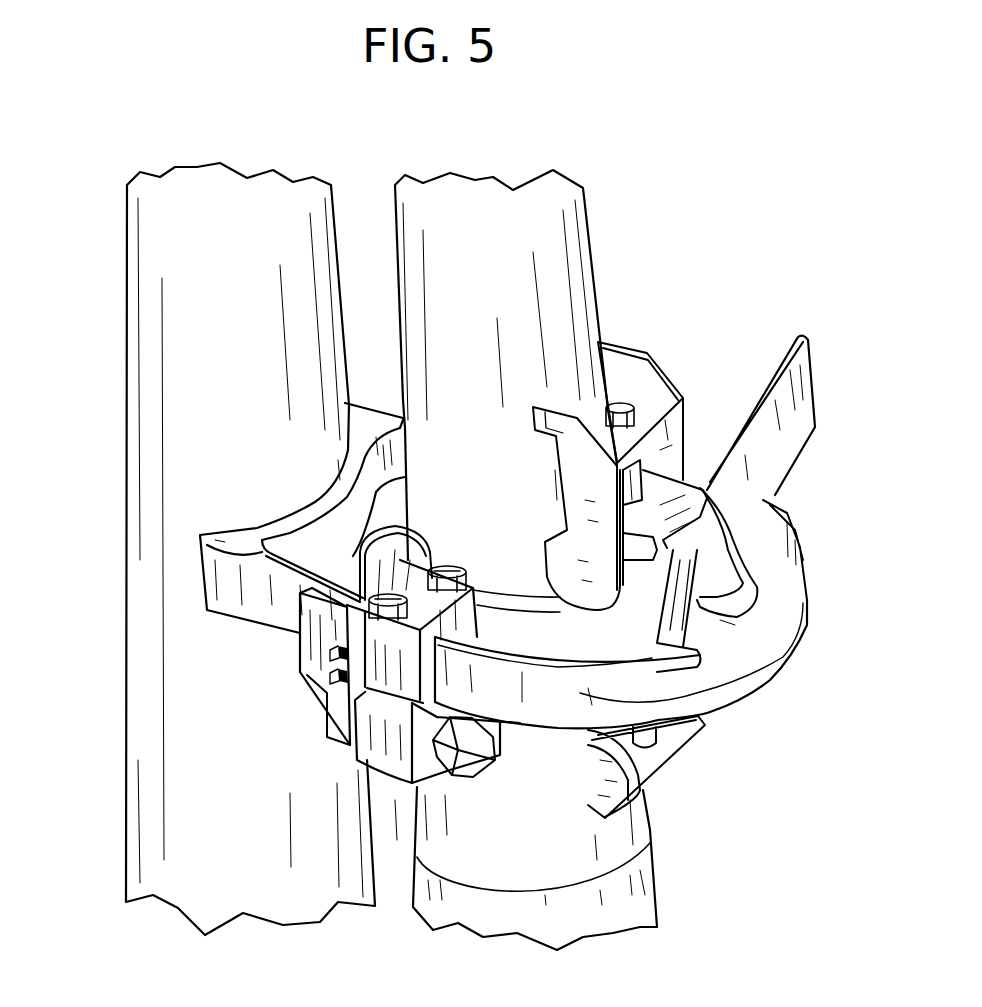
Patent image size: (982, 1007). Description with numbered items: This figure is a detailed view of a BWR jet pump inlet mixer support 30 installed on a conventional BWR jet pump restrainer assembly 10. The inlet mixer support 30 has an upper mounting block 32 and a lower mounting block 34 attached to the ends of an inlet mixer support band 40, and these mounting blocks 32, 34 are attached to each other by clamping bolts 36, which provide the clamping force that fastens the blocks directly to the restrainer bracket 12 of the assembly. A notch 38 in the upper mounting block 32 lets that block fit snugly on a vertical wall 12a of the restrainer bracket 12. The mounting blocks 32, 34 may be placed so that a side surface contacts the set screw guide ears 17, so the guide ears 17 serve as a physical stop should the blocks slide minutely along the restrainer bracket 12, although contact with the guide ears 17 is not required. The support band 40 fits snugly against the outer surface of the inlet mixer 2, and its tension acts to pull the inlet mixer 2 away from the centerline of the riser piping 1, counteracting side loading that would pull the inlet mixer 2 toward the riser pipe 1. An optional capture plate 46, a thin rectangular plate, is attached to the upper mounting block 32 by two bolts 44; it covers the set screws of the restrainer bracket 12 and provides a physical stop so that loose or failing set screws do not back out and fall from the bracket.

The riser piping 1 is at (248, 192).
The inlet mixer 2 is at (480, 197).
The BWR jet pump restrainer assembly 10 is at (737, 337).
The restrainer bracket 12 is at (737, 630).
The vertical wall 12a is at (673, 717).
The set screw guide ears 17 is at (360, 553).
The inlet mixer support 30 is at (284, 780).
The upper mounting block 32 is at (330, 693).
The lower mounting block 34 is at (396, 760).
The clamping bolts 36 is at (450, 563).
The notch 38 is at (438, 673).
The inlet mixer support band 40 is at (327, 733).
The bolts 44 is at (330, 676).
The capture plate 46 is at (300, 638).